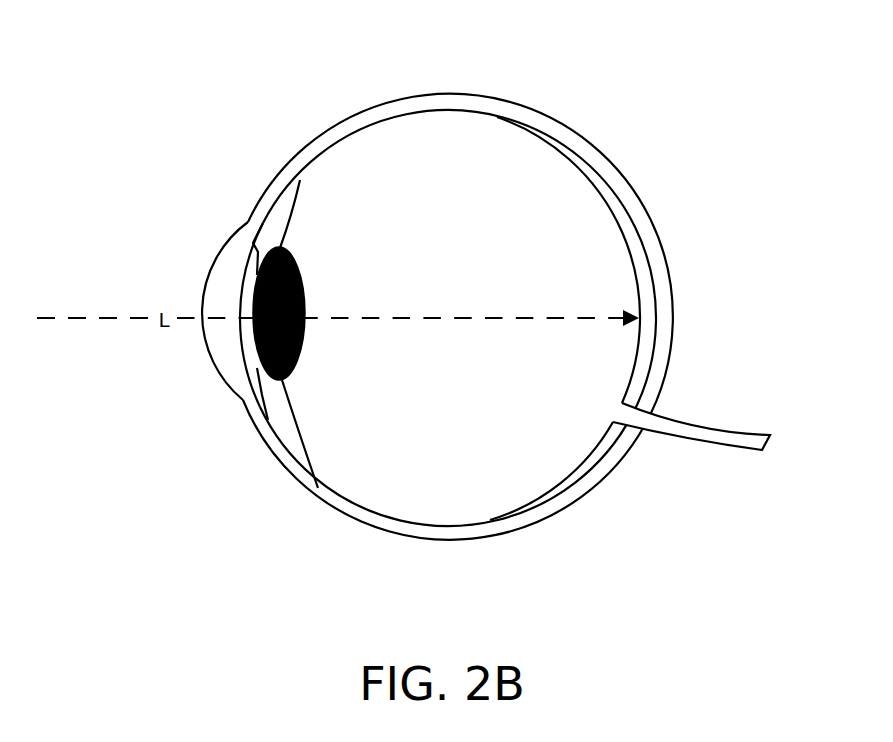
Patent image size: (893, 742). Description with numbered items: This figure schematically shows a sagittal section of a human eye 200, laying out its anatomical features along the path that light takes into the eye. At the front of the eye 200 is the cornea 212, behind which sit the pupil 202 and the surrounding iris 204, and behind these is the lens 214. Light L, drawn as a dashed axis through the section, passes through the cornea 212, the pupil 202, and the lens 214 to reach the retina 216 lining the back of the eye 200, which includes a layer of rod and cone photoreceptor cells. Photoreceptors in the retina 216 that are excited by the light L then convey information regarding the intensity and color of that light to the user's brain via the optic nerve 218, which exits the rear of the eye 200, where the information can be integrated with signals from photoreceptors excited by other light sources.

The eye 200 is at (305, 79).
The pupil 202 is at (235, 313).
The iris 204 is at (298, 178).
The cornea 212 is at (208, 352).
The lens 214 is at (300, 353).
The retina 216 is at (568, 163).
The optic nerve 218 is at (727, 452).